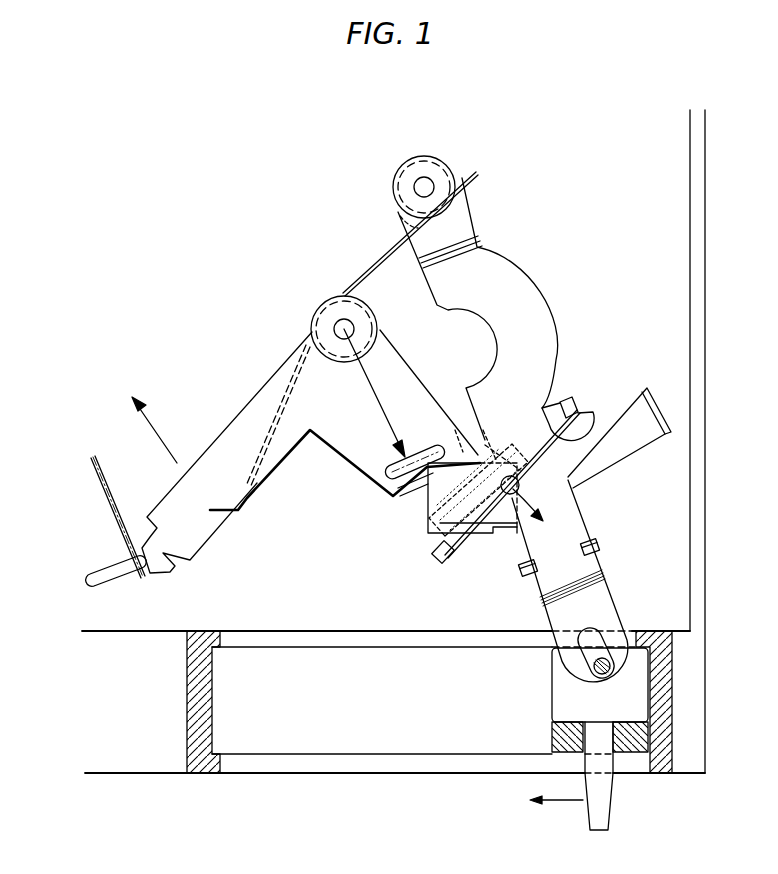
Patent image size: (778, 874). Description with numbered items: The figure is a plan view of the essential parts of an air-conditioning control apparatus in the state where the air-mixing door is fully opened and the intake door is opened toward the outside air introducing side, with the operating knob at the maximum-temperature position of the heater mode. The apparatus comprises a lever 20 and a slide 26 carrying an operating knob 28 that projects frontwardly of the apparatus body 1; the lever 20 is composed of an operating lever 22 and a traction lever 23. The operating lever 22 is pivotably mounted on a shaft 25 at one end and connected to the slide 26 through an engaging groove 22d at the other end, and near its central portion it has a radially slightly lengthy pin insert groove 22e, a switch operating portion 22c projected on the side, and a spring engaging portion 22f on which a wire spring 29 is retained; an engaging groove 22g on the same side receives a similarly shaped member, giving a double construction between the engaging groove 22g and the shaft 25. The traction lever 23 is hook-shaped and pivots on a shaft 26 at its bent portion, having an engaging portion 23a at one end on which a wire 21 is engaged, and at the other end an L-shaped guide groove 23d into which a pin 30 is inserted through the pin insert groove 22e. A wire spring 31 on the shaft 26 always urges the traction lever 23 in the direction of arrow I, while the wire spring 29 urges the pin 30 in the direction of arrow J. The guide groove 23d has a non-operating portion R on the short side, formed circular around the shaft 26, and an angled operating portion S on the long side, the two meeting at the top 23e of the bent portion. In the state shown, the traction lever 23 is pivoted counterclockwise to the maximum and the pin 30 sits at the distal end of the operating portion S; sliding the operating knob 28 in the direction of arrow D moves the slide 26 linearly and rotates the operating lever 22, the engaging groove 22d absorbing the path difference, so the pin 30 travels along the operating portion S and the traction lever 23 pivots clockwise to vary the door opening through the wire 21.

The apparatus body 1 is at (172, 768).
The lever 20 is at (354, 492).
The wire 21 is at (104, 480).
The operating lever 22 is at (538, 290).
The switch operating portion 22c is at (660, 432).
The engaging groove 22d is at (603, 640).
The pin insert groove 22e is at (521, 481).
The spring engaging portion 22f is at (573, 397).
The engaging groove 22g is at (520, 570).
The traction lever 23 is at (252, 402).
The engaging portion 23a is at (122, 566).
The guide groove 23d is at (388, 497).
The top of the bent portion 23e is at (413, 478).
The shaft 25 is at (290, 748).
The slide 26 is at (623, 712).
The operating knob 28 is at (598, 824).
The wire spring 29 is at (584, 410).
The pin 30 is at (598, 548).
The wire spring 31 is at (375, 262).
The non-operating portion R is at (415, 457).
The operating portion S is at (447, 460).
The arrow I is at (143, 404).
The arrow J is at (527, 496).
The arrow D is at (548, 805).